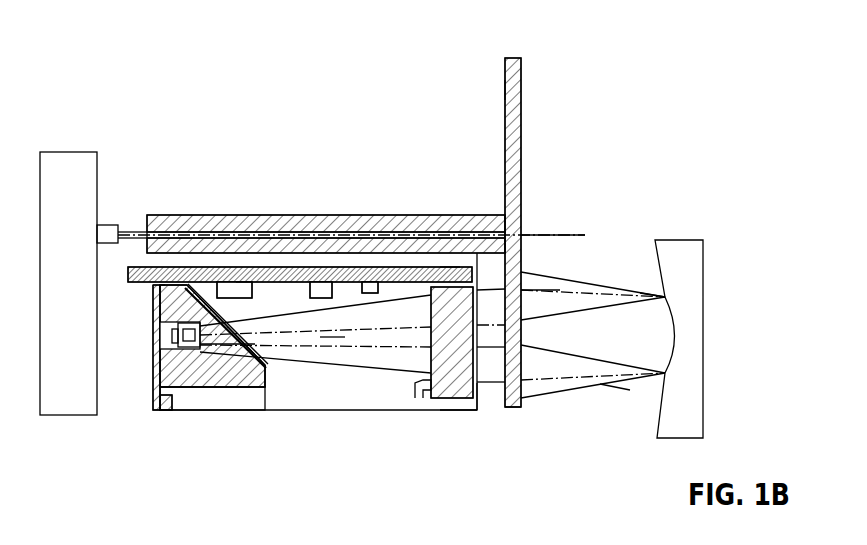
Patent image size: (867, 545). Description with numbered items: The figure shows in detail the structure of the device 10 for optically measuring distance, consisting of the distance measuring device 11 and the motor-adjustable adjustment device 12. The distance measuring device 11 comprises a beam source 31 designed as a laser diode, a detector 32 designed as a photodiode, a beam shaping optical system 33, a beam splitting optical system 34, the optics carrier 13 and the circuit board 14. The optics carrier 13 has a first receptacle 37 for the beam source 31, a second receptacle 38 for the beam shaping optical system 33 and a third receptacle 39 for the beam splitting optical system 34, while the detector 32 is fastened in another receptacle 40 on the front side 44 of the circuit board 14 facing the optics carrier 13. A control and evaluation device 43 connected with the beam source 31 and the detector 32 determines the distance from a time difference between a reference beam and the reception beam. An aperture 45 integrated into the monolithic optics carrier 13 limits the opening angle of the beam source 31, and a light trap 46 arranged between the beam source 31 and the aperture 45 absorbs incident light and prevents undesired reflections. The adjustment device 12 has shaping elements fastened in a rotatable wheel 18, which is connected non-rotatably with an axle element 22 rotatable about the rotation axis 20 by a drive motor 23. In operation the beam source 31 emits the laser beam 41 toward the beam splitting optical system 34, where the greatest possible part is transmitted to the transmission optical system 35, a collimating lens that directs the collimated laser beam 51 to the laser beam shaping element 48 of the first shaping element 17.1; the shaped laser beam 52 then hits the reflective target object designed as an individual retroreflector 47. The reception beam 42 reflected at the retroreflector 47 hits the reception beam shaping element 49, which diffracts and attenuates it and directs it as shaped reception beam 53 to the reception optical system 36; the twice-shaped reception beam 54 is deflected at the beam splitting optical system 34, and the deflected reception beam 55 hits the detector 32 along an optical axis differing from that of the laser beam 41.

The device for optically measuring distance 10 is at (172, 108).
The distance measuring device 11 is at (150, 425).
The adjustment device 12 is at (536, 101).
The optics carrier 13 is at (260, 395).
The circuit board 14 is at (407, 252).
The first shaping element 17.1 is at (515, 408).
The rotatable wheel 18 is at (504, 88).
The rotation axis 20 is at (556, 232).
The axle element 22 is at (123, 233).
The drive motor 23 is at (65, 170).
The beam source 31 is at (167, 339).
The detector 32 is at (233, 288).
The beam shaping optical system 33 is at (450, 267).
The beam splitting optical system 34 is at (155, 300).
The transmission optical system 35 is at (431, 337).
The reception optical system 36 is at (415, 398).
The first receptacle 37 is at (172, 410).
The second receptacle 38 is at (458, 411).
The third receptacle 39 is at (190, 267).
The receptacle 40 is at (242, 283).
The laser beam 41 is at (287, 340).
The reception beam 42 is at (613, 385).
The control and evaluation device 43 is at (316, 270).
The front side 44 is at (364, 283).
The aperture 45 is at (232, 387).
The light trap 46 is at (212, 387).
The retroreflector 47 is at (688, 240).
The laser beam shaping element 48 is at (522, 335).
The reception beam shaping element 49 is at (522, 297).
The collimated laser beam 51 is at (488, 323).
The shaped laser beam 52 is at (616, 300).
The shaped reception beam 53 is at (480, 383).
The twice-shaped reception beam 54 is at (332, 365).
The deflected reception beam 55 is at (310, 292).